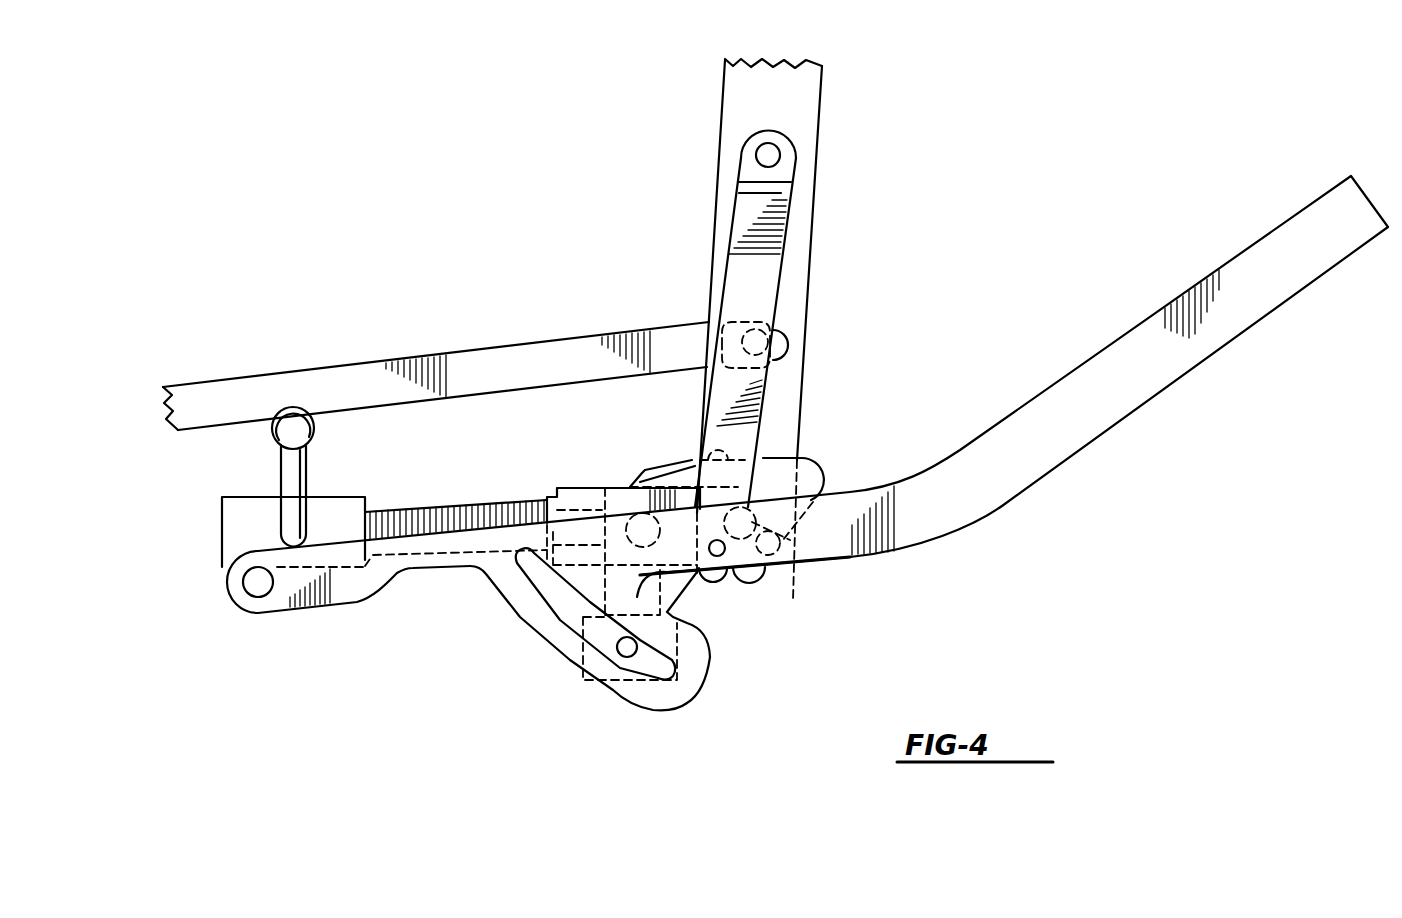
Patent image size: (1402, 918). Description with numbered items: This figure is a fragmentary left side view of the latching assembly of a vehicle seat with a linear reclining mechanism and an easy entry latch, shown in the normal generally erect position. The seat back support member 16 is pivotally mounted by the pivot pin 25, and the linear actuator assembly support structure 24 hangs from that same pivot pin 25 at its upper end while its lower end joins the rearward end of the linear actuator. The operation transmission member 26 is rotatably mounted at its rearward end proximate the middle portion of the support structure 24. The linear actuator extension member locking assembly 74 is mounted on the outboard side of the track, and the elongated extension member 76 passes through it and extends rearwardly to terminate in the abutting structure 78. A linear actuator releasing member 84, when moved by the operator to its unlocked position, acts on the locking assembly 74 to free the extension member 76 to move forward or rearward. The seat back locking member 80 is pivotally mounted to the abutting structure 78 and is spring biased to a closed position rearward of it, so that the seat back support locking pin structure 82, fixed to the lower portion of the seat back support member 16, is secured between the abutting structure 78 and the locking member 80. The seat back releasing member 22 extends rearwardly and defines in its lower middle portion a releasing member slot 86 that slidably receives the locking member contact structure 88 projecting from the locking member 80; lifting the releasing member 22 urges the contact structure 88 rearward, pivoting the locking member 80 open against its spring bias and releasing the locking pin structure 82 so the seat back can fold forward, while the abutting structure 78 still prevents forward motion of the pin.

The seat back support member 16 is at (805, 100).
The seat back releasing member 22 is at (1062, 389).
The linear actuator assembly support structure 24 is at (747, 207).
The pivot pin 25 is at (764, 152).
The operation transmission member 26 is at (565, 355).
The linear actuator extension member locking assembly 74 is at (237, 538).
The extension member 76 is at (433, 520).
The abutting structure 78 is at (687, 577).
The seat back locking member 80 is at (812, 463).
The seat back support locking pin structure 82 is at (795, 598).
The linear actuator releasing member 84 is at (287, 470).
The seat back releasing member slot 86 is at (545, 587).
The seat back locking member contact structure 88 is at (627, 648).